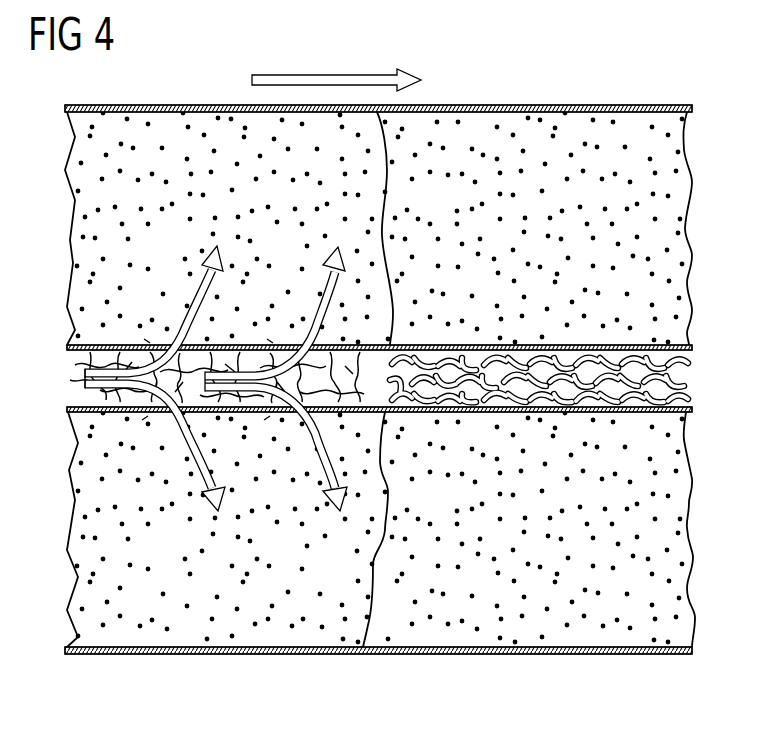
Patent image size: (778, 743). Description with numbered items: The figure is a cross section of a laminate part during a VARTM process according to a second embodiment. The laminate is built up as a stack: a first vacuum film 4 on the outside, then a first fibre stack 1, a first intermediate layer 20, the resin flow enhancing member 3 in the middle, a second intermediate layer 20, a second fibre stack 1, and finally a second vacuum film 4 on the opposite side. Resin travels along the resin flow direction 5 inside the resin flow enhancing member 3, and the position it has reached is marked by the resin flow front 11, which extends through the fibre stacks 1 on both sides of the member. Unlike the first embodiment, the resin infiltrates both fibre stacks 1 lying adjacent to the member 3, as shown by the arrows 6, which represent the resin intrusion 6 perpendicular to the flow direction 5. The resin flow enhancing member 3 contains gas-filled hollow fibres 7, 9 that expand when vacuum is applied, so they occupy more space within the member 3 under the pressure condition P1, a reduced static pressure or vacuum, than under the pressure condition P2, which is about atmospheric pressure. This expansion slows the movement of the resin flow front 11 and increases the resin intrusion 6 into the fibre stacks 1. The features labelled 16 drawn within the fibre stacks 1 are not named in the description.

The fibre stack 1 is at (676, 203).
The resin flow enhancing member 3 is at (82, 390).
The vacuum film 4 is at (582, 105).
The resin flow direction 5 is at (321, 78).
The resin intrusion 6 is at (202, 267).
The gas-filled hollow fibre 7 is at (82, 366).
The gas-filled hollow fibre 9 is at (678, 362).
The resin flow front 11 is at (387, 205).
The flow channels 16 is at (161, 344).
The intermediate layer 20 is at (685, 347).
The pressure condition P1 is at (593, 633).
The pressure condition P2 is at (178, 632).